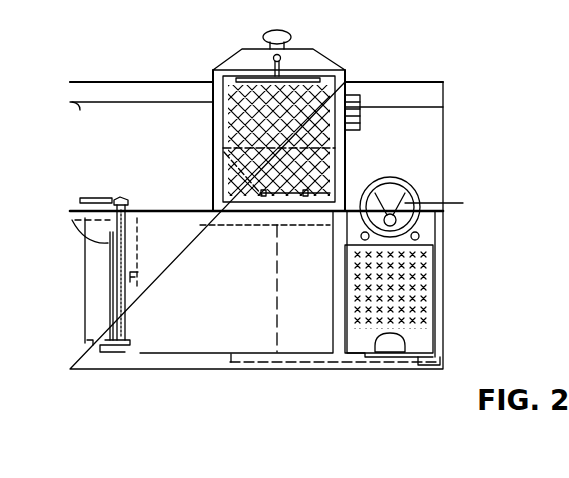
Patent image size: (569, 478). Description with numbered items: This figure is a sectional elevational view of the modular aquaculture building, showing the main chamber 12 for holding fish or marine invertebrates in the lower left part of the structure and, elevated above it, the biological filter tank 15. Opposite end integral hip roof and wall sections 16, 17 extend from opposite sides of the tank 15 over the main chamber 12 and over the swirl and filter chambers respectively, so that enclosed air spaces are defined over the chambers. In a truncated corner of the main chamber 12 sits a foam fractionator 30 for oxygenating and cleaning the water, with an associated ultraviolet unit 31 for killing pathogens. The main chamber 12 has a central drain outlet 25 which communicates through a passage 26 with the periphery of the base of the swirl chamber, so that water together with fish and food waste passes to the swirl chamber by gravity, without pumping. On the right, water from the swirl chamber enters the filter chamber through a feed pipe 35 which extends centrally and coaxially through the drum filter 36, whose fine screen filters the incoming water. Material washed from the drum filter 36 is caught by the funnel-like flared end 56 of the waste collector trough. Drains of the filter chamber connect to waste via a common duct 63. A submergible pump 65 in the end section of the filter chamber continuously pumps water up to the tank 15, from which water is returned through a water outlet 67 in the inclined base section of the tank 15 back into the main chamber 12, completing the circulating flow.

The main chamber 12 is at (183, 343).
The biological filter tank 15 is at (208, 72).
The integral hip roof and wall section 16 is at (142, 76).
The integral hip roof and wall section 17 is at (422, 86).
The central drain outlet 25 is at (228, 360).
The passage 26 is at (301, 362).
The foam fractionator 30 is at (93, 256).
The ultraviolet unit 31 is at (72, 218).
The feed pipe 35 is at (398, 218).
The drum filter 36 is at (412, 192).
The flared end of waste collector trough 56 is at (362, 117).
The common duct 63 is at (440, 358).
The submergible pump 65 is at (398, 352).
The water outlet 67 is at (227, 217).